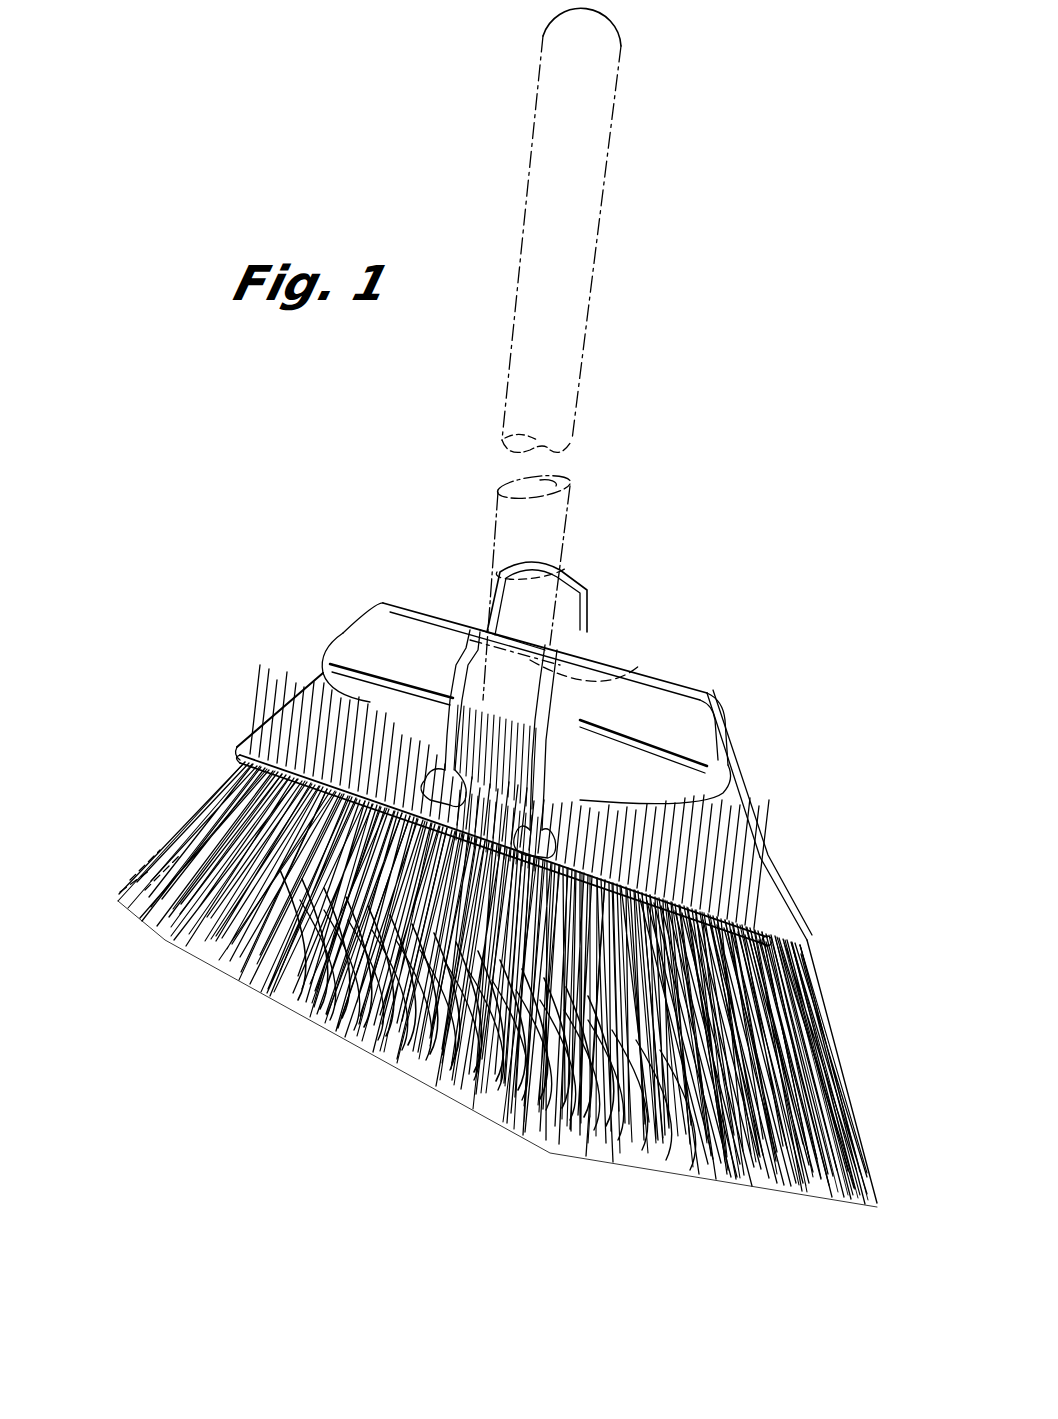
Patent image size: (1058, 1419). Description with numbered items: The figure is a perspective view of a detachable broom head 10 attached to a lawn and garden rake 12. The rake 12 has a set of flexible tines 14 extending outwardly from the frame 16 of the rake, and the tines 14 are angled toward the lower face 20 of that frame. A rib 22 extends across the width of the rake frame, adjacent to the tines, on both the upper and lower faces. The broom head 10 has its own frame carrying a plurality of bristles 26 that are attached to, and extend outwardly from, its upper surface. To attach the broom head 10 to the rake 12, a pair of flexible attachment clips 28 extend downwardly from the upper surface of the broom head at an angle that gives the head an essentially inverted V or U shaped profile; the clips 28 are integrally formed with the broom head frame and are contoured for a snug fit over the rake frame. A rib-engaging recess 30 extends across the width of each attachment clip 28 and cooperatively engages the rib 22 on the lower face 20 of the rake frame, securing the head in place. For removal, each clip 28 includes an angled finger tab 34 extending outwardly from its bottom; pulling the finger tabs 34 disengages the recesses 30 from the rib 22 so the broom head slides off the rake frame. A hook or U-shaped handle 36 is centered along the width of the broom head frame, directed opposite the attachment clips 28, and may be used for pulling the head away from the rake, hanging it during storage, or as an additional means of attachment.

The detachable broom head 10 is at (762, 797).
The lawn and garden rake 12 is at (508, 393).
The flexible tines 14 is at (140, 888).
The frame of the rake 16 is at (270, 745).
The lower face 20 is at (455, 700).
The rib 22 is at (600, 668).
The bristles 26 is at (822, 985).
The flexible attachment clips 28 is at (383, 615).
The rib-engaging recess 30 is at (335, 658).
The angled finger tab 34 is at (425, 740).
The hook or U-shaped handle 36 is at (585, 598).